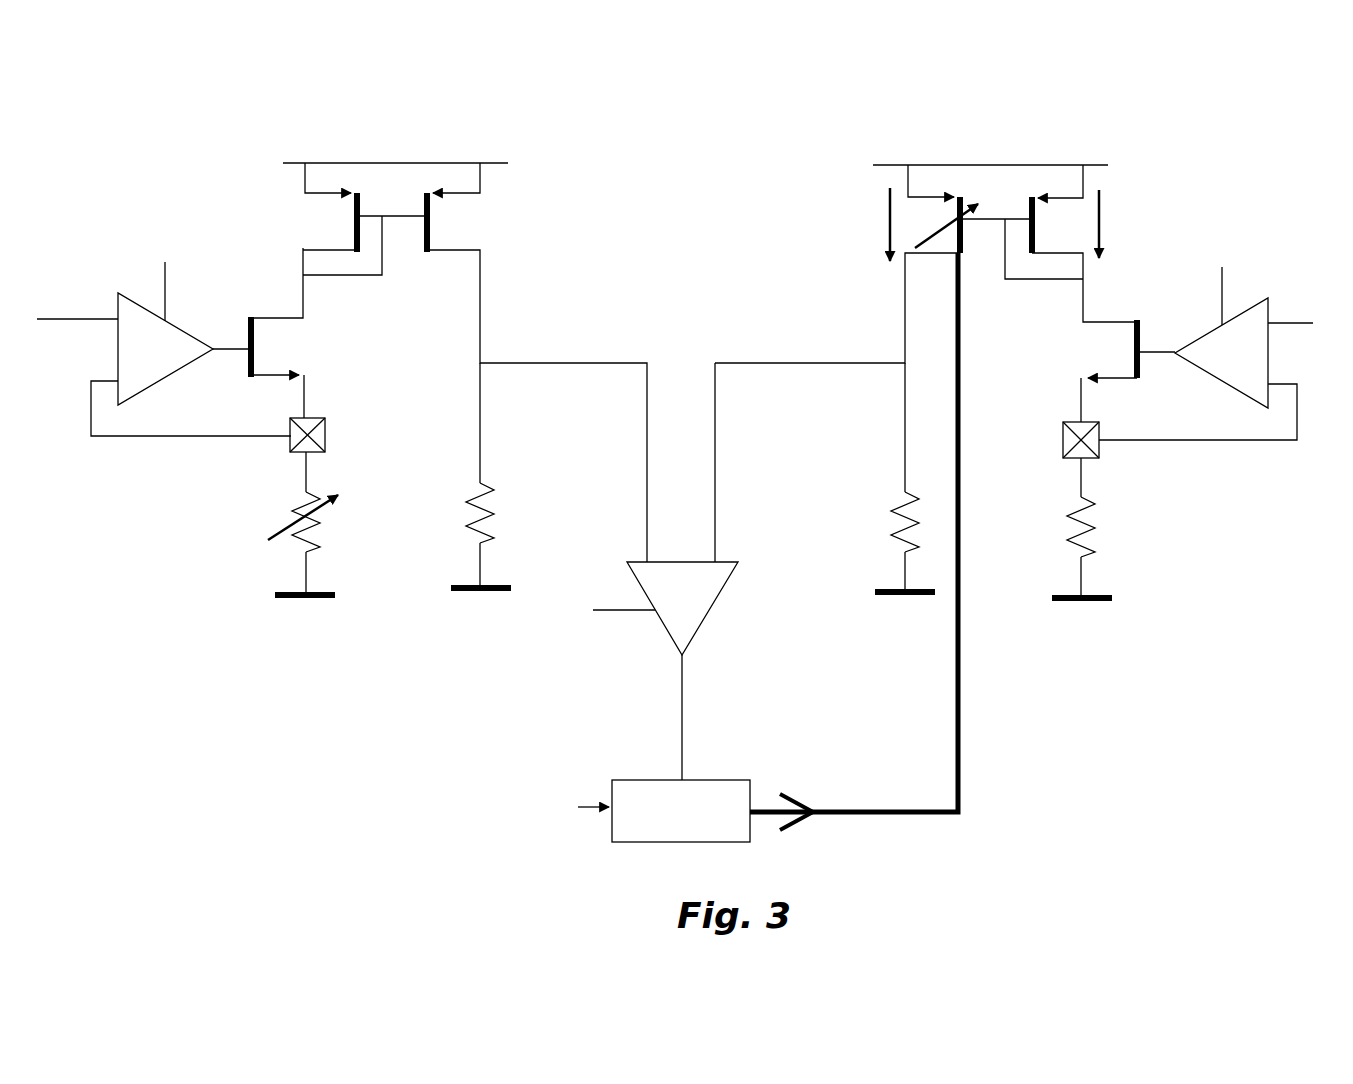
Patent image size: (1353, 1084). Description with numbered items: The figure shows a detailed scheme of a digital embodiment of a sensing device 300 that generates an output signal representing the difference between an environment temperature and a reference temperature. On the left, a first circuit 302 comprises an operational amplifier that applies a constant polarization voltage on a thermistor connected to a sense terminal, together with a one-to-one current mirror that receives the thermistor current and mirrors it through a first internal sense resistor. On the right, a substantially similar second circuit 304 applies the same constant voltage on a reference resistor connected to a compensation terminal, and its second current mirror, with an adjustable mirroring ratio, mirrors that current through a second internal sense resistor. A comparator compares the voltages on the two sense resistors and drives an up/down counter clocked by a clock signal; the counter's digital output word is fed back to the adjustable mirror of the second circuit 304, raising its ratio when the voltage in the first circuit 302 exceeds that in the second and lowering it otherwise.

The sensing device 300 is at (680, 116).
The first circuit 302 is at (248, 160).
The second circuit 304 is at (1190, 205).